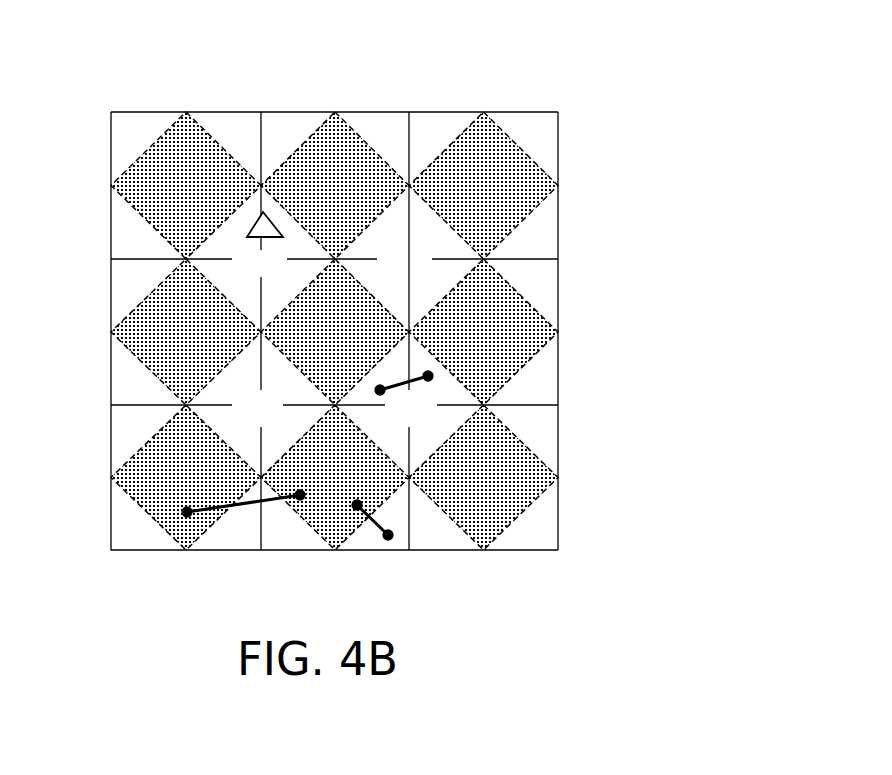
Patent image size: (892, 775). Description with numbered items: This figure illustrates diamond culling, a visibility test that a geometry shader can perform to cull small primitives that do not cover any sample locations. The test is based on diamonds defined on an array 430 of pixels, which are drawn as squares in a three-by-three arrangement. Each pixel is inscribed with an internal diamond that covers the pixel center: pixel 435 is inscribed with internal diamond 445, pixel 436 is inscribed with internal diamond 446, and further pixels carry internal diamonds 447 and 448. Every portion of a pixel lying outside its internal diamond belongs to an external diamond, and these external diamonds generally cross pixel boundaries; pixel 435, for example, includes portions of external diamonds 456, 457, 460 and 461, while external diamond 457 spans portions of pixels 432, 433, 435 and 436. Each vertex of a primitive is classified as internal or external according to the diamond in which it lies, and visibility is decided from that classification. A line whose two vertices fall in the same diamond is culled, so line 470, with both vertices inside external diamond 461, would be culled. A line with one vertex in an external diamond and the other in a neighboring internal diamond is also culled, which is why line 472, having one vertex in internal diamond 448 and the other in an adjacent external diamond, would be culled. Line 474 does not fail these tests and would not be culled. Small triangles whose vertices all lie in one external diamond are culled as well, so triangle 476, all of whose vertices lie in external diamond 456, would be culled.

The array 430 is at (640, 218).
The pixel 432 is at (375, 110).
The pixel 433 is at (533, 110).
The pixel 435 is at (258, 307).
The pixel 436 is at (558, 370).
The internal diamond 445 is at (355, 331).
The internal diamond 446 is at (502, 331).
The internal diamond 447 is at (203, 482).
The internal diamond 448 is at (358, 482).
The external diamond 456 is at (277, 274).
The external diamond 457 is at (425, 266).
The external diamond 460 is at (277, 423).
The external diamond 461 is at (432, 423).
The line 470 is at (412, 374).
The line 472 is at (385, 540).
The line 474 is at (250, 503).
The triangle 476 is at (257, 215).